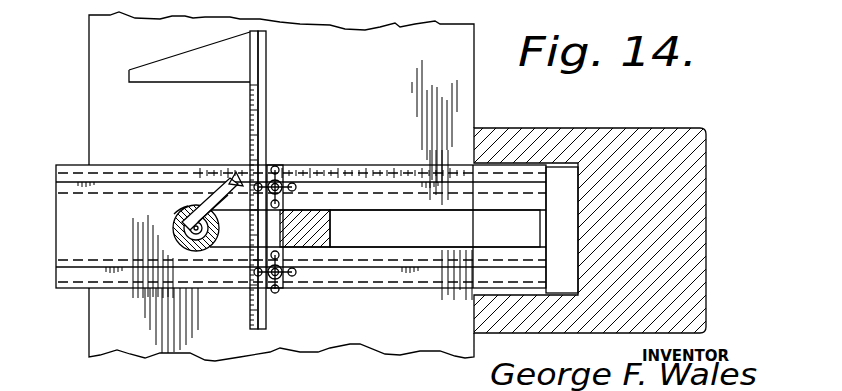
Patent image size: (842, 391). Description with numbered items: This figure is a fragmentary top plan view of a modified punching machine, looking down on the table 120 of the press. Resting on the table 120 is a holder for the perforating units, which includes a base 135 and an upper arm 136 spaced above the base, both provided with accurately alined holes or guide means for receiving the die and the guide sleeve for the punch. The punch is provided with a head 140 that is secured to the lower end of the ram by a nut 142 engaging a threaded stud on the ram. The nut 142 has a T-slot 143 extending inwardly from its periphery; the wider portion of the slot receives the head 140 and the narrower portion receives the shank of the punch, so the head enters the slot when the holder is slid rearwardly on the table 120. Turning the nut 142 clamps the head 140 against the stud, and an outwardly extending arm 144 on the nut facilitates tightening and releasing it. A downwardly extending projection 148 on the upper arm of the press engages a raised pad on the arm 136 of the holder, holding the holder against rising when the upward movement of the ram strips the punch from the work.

The table 120 is at (470, 97).
The base 135 is at (60, 212).
The upper arm 136 is at (435, 228).
The head 140 is at (182, 242).
The nut 142 is at (177, 200).
The T-slot 143 is at (180, 215).
The arm 144 is at (228, 178).
The projection 148 is at (307, 212).